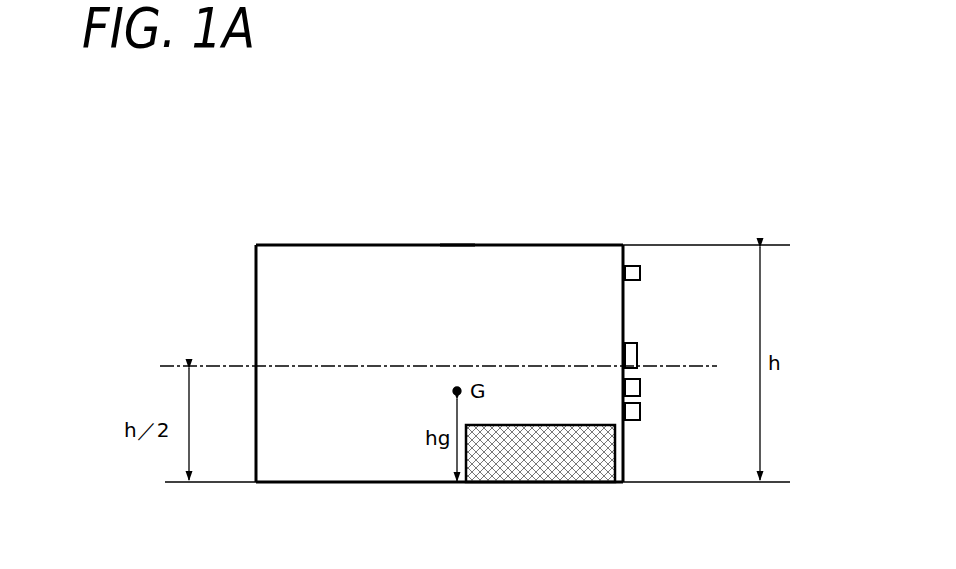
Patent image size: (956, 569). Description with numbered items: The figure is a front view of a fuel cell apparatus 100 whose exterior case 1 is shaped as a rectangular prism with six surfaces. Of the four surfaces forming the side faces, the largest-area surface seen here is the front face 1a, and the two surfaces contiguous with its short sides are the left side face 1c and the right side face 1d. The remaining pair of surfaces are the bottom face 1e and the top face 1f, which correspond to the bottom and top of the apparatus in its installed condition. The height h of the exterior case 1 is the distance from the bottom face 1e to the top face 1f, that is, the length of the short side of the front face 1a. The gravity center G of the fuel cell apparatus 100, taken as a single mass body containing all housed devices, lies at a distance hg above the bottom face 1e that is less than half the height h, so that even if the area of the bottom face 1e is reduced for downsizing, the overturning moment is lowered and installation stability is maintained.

The fuel cell apparatus 100 is at (240, 195).
The exterior case 1 is at (442, 355).
The front face 1a is at (343, 272).
The left side face 1c is at (256, 296).
The right side face 1d is at (626, 321).
The bottom face 1e is at (362, 483).
The top face 1f is at (458, 244).